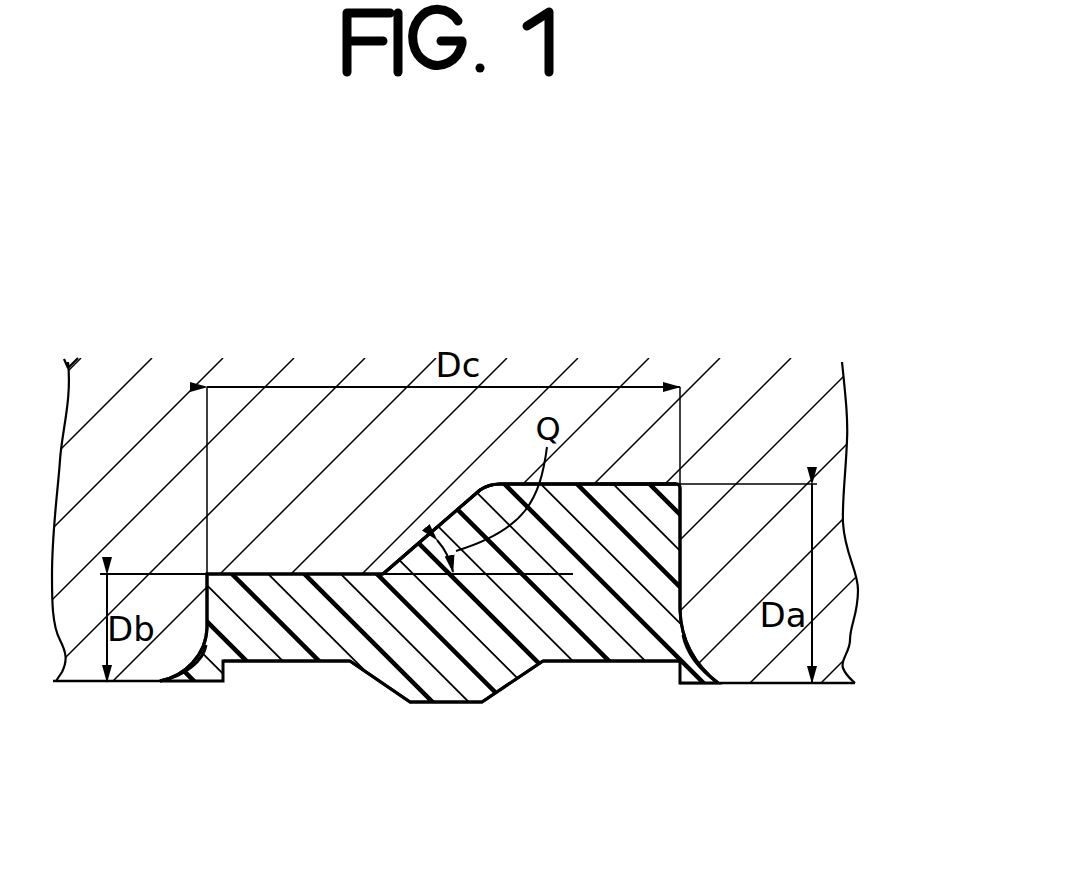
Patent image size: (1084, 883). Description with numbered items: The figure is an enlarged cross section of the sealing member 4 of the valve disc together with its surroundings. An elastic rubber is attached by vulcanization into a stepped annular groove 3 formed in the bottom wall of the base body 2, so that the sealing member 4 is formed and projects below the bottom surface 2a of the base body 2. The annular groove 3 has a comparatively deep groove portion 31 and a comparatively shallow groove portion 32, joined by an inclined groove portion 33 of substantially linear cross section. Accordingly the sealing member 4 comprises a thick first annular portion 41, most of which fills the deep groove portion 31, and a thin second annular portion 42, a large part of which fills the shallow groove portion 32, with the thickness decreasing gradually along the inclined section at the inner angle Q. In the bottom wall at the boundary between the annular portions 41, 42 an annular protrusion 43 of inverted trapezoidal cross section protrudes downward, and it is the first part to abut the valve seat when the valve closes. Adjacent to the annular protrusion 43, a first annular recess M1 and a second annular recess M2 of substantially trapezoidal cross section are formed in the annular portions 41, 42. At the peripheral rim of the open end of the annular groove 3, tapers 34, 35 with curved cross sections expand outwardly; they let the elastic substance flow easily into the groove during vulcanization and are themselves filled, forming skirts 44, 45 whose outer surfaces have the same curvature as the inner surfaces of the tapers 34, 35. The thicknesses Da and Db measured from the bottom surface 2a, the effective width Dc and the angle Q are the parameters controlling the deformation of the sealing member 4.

The base body 2 is at (823, 440).
The bottom surface of the base body 2a is at (798, 684).
The annular groove 3 is at (475, 286).
The deep groove portion 31 is at (585, 517).
The shallow groove portion 32 is at (410, 551).
The inclined groove portion 33 is at (468, 504).
The taper 34 is at (705, 675).
The taper 35 is at (205, 660).
The sealing member 4 is at (620, 691).
The first annular portion 41 is at (621, 515).
The second annular portion 42 is at (277, 600).
The annular protrusion 43 is at (440, 692).
The skirt 44 is at (694, 672).
The skirt 45 is at (160, 683).
The first annular recess M1 is at (567, 662).
The second annular recess M2 is at (305, 661).